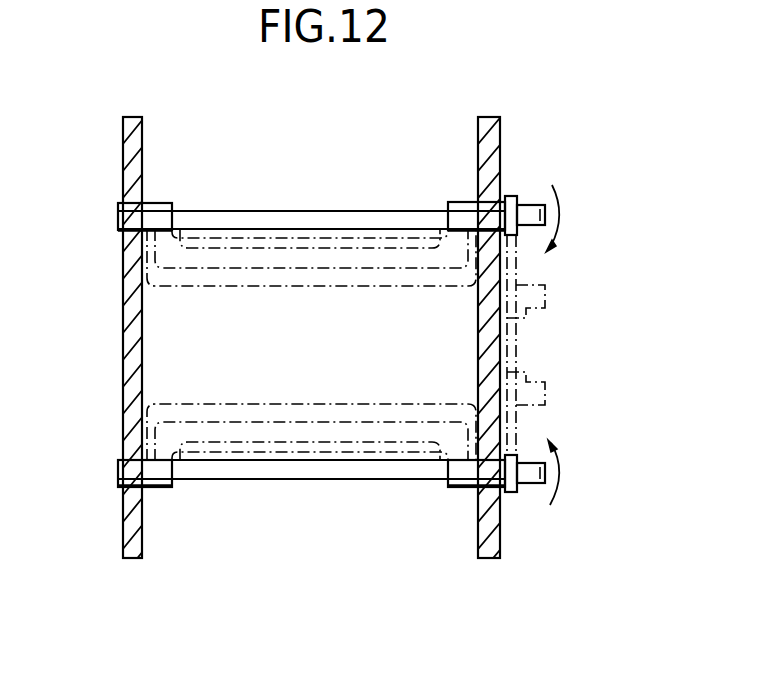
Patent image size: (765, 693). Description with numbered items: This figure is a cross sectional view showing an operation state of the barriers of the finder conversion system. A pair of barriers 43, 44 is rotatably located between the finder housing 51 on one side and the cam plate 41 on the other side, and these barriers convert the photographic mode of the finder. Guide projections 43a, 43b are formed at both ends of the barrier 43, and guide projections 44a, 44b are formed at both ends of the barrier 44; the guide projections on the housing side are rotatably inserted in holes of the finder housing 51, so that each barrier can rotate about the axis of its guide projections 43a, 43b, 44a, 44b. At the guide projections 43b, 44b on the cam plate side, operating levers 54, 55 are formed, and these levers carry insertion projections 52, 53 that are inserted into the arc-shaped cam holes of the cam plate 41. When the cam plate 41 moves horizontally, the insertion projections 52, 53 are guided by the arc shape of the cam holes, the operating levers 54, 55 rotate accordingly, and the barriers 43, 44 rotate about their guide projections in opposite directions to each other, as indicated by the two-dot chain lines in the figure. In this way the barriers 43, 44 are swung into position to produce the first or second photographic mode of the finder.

The cam plate 41 is at (490, 348).
The barrier 43 is at (297, 212).
The guide projection 43a is at (125, 210).
The guide projection 43b is at (462, 208).
The barrier 44 is at (295, 480).
The guide projection 44a is at (125, 466).
The guide projection 44b is at (455, 470).
The finder housing 51 is at (130, 343).
The insertion projection 52 is at (545, 215).
The insertion projection 53 is at (545, 470).
The operating lever 54 is at (511, 200).
The operating lever 55 is at (517, 455).